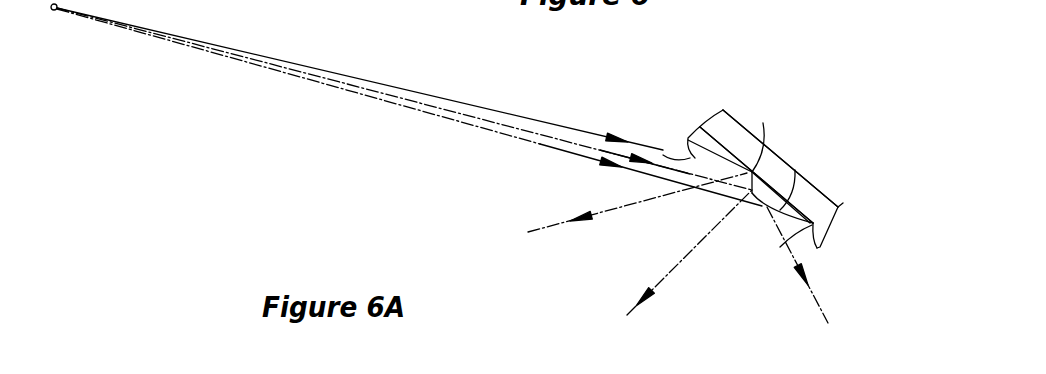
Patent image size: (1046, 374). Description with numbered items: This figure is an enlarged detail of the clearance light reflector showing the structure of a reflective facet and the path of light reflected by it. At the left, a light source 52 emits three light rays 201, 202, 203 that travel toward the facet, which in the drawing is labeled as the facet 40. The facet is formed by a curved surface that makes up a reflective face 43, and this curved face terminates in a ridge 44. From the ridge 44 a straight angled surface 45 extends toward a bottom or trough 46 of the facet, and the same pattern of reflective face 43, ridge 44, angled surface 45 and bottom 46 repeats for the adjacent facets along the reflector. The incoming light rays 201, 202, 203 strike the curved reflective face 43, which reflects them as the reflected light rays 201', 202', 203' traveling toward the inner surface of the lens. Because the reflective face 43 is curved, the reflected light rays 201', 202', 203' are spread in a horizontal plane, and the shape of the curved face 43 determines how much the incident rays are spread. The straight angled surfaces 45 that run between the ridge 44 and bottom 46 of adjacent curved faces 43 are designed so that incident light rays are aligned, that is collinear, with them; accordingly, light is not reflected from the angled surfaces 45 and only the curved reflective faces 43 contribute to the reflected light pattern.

The light source 52 is at (55, 10).
The light ray 201 is at (360, 75).
The light ray 202 is at (404, 99).
The light ray 203 is at (409, 107).
The reflected light ray 201' is at (622, 240).
The reflected light ray 202' is at (689, 278).
The reflected light ray 203' is at (786, 287).
The blade tooth 40 is at (717, 186).
The reflective face 43 is at (688, 140).
The ridge 44 is at (660, 150).
The straight angled surface 45 is at (740, 122).
The bottom 46 is at (765, 145).